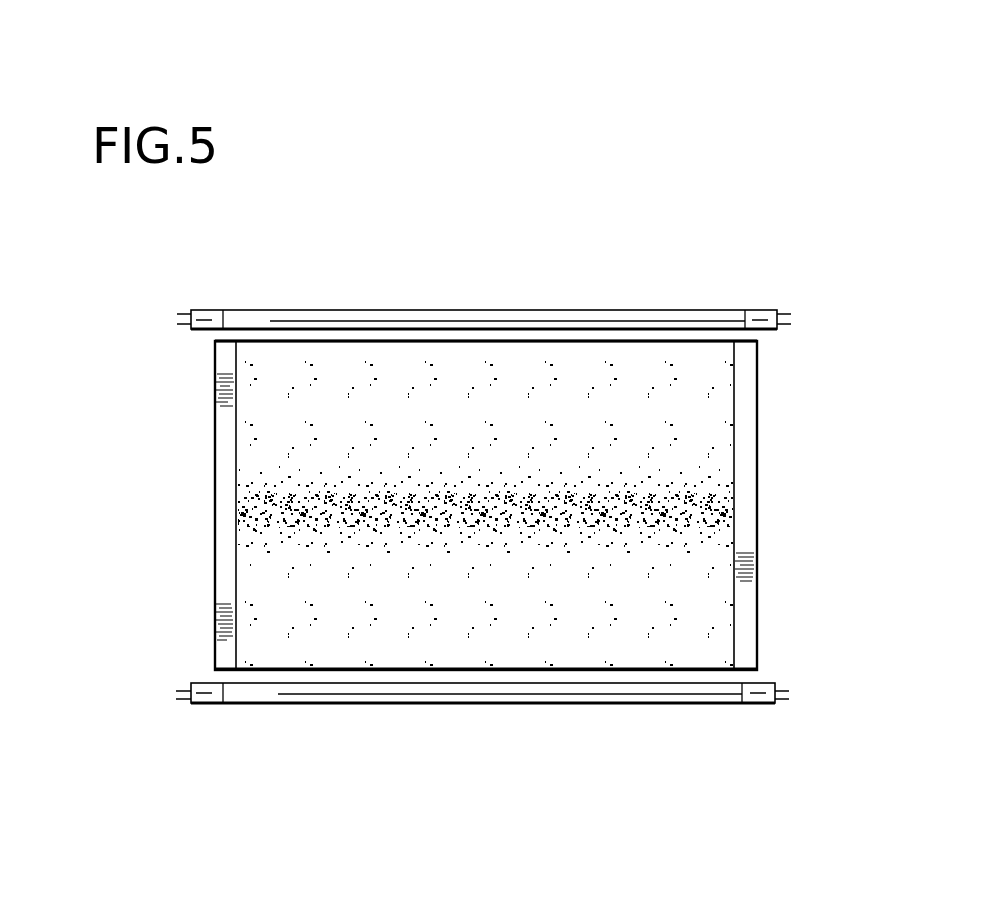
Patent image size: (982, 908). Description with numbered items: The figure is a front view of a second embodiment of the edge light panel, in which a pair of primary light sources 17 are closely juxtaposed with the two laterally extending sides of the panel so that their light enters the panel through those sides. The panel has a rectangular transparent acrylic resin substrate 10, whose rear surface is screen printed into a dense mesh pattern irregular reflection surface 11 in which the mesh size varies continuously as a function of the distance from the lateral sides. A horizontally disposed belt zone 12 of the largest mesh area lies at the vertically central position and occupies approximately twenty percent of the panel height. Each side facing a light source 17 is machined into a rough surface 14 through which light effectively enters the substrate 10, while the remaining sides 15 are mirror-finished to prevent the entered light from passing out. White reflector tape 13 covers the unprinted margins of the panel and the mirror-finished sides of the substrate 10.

The transparent acrylic resin substrate 10 is at (247, 593).
The dense mesh pattern irregular reflection surface 11 is at (720, 468).
The belt zone 12 is at (733, 520).
The white reflector tape 13 is at (225, 484).
The rough surface 14 is at (633, 343).
The remaining sides 15 is at (213, 412).
The primary light source 17 is at (487, 312).